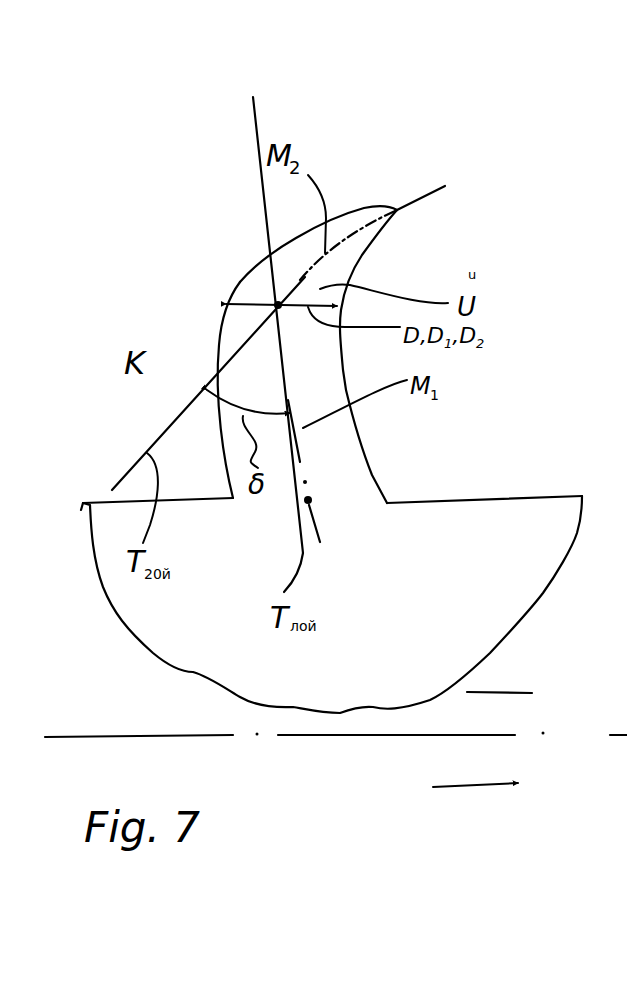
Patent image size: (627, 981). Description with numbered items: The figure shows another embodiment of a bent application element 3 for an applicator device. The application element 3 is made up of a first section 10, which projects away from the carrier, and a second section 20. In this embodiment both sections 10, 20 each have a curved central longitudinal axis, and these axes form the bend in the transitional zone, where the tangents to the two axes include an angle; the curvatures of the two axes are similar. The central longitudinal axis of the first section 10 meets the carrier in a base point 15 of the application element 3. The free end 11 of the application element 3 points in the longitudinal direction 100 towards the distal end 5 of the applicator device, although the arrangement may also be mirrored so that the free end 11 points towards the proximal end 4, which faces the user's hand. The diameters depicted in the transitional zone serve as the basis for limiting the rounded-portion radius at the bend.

The application element 3 is at (352, 190).
The free end 11 is at (397, 210).
The second section 20 is at (362, 241).
The first section 10 is at (343, 441).
The base point 15 is at (310, 500).
The proximal end 4 is at (117, 648).
The distal end 5 is at (535, 633).
The longitudinal direction 100 is at (475, 790).